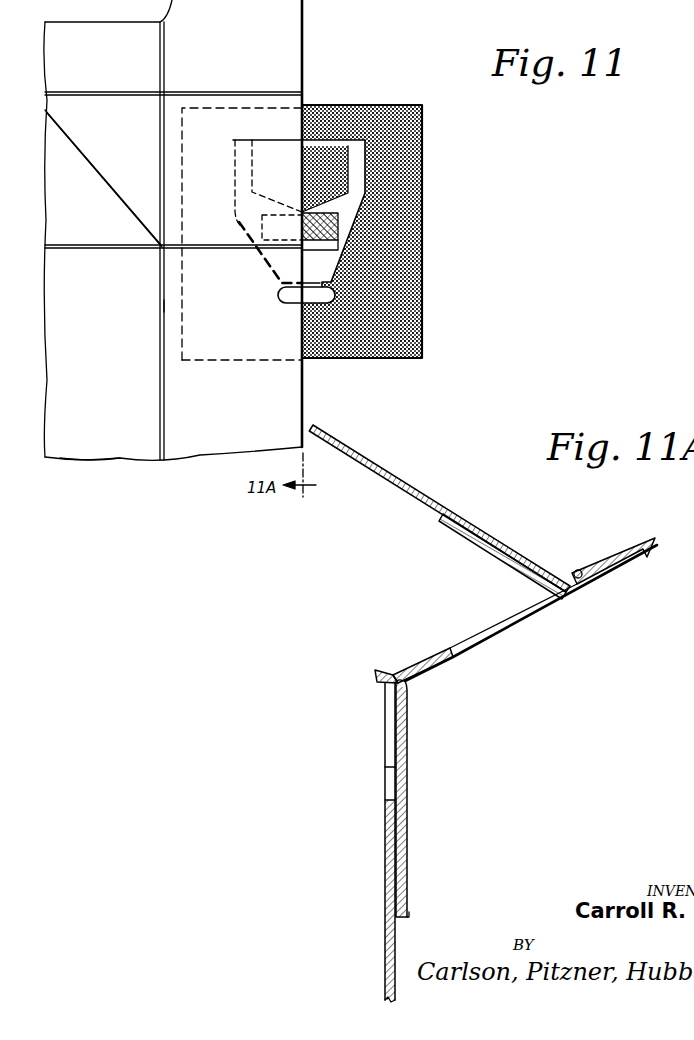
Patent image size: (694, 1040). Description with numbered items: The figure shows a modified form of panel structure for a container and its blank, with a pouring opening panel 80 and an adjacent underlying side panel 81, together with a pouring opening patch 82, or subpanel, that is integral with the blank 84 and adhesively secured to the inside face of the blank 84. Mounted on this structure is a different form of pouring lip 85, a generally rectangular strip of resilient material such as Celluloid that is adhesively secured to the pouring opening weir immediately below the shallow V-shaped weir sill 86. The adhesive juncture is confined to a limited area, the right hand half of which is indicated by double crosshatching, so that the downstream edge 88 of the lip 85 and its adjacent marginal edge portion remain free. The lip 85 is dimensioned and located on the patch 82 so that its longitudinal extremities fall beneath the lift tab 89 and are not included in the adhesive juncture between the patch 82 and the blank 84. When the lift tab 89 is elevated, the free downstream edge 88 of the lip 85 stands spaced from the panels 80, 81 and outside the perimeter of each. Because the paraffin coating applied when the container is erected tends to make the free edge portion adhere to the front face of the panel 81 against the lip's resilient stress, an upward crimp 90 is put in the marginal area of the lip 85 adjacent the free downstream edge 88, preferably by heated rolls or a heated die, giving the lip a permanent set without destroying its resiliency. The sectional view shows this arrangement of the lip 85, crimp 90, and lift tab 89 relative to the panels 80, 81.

In FIG. 11, the pouring opening panel 80 is at (172, 168).
In FIG. 11A, the pouring opening panel 80 is at (596, 566).
In FIG. 11, the side panel 81 is at (172, 307).
In FIG. 11A, the side panel 81 is at (387, 829).
In FIG. 11, the pouring opening patch 82 is at (423, 320).
In FIG. 11, the blank 84 is at (92, 459).
In FIG. 11, the pouring lip 85 is at (338, 229).
In FIG. 11A, the pouring lip 85 is at (416, 662).
In FIG. 11, the weir sill 86 is at (327, 200).
In FIG. 11A, the weir sill 86 is at (472, 646).
In FIG. 11, the downstream edge 88 is at (322, 252).
In FIG. 11A, the downstream edge 88 is at (375, 678).
In FIG. 11, the lift tab 89 is at (286, 294).
In FIG. 11A, the lift tab 89 is at (409, 480).
In FIG. 11, the crimp 90 is at (262, 251).
In FIG. 11A, the crimp 90 is at (393, 672).